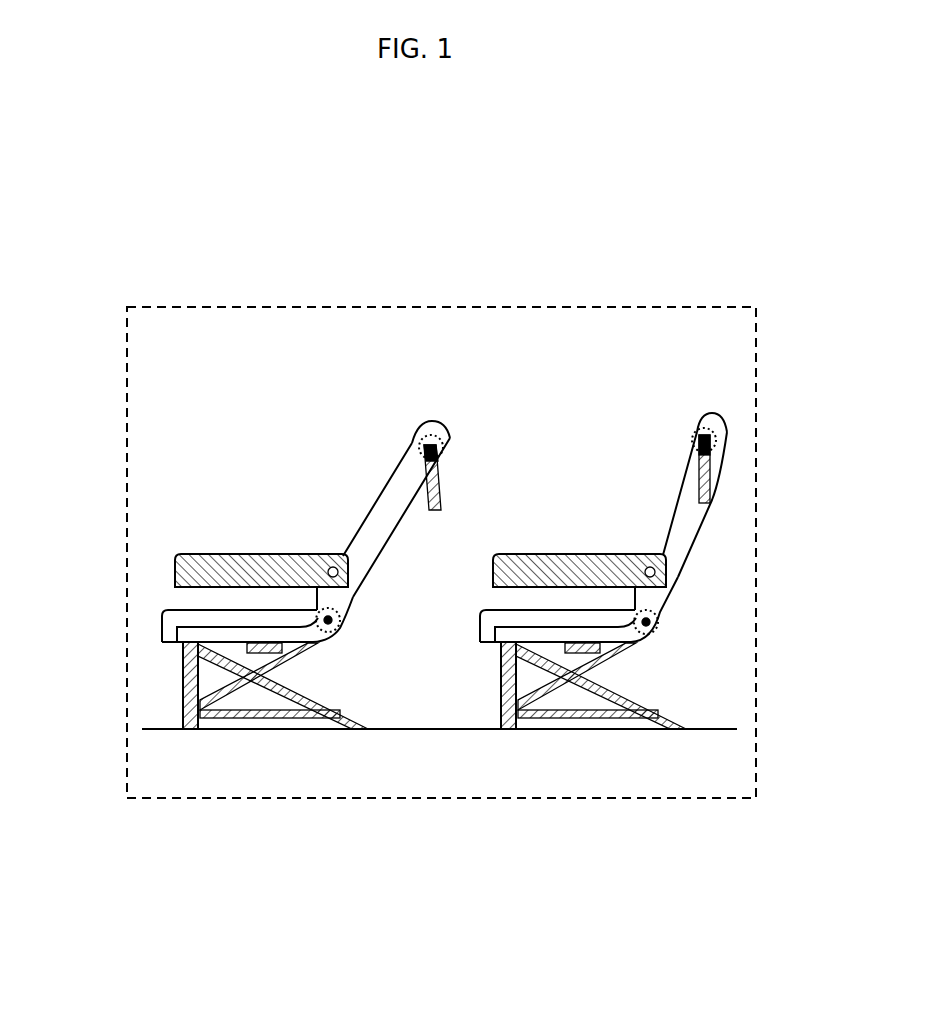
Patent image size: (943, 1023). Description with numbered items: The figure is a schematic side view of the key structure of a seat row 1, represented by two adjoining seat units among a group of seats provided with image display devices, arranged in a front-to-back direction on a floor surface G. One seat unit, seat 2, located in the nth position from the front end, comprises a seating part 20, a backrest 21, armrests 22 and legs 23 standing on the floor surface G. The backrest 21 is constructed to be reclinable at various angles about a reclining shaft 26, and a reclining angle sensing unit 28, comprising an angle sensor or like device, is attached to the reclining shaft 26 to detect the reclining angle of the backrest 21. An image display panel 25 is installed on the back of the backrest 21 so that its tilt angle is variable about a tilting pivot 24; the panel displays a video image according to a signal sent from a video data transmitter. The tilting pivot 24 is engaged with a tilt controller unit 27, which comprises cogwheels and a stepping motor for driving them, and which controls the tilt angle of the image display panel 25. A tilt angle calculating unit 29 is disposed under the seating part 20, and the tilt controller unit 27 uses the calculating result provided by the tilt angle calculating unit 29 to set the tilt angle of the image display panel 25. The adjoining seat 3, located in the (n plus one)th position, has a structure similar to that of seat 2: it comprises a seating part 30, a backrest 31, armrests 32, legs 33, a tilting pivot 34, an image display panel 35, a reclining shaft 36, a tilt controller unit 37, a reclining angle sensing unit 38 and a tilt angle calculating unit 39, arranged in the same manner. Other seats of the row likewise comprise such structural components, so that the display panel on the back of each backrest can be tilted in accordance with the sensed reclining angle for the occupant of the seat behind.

The seat row 1 is at (418, 800).
The seat 2 is at (431, 426).
The seat 3 is at (710, 416).
The seating part 20 is at (175, 617).
The backrest 21 is at (402, 488).
The armrests 22 is at (188, 553).
The legs 23 is at (185, 680).
The tilting pivot 24 is at (460, 432).
The image display panel 25 is at (440, 490).
The reclining shaft 26 is at (336, 632).
The tilt controller unit 27 is at (436, 432).
The reclining angle sensing unit 28 is at (347, 615).
The tilt angle calculating unit 29 is at (262, 653).
The seating part 30 is at (488, 624).
The backrest 31 is at (686, 483).
The armrests 32 is at (497, 560).
The legs 33 is at (500, 686).
The tilting pivot 34 is at (698, 432).
The image display panel 35 is at (712, 497).
The reclining shaft 36 is at (660, 628).
The tilt controller unit 37 is at (725, 426).
The reclining angle sensing unit 38 is at (660, 617).
The tilt angle calculating unit 39 is at (585, 653).
The floor surface G is at (465, 731).